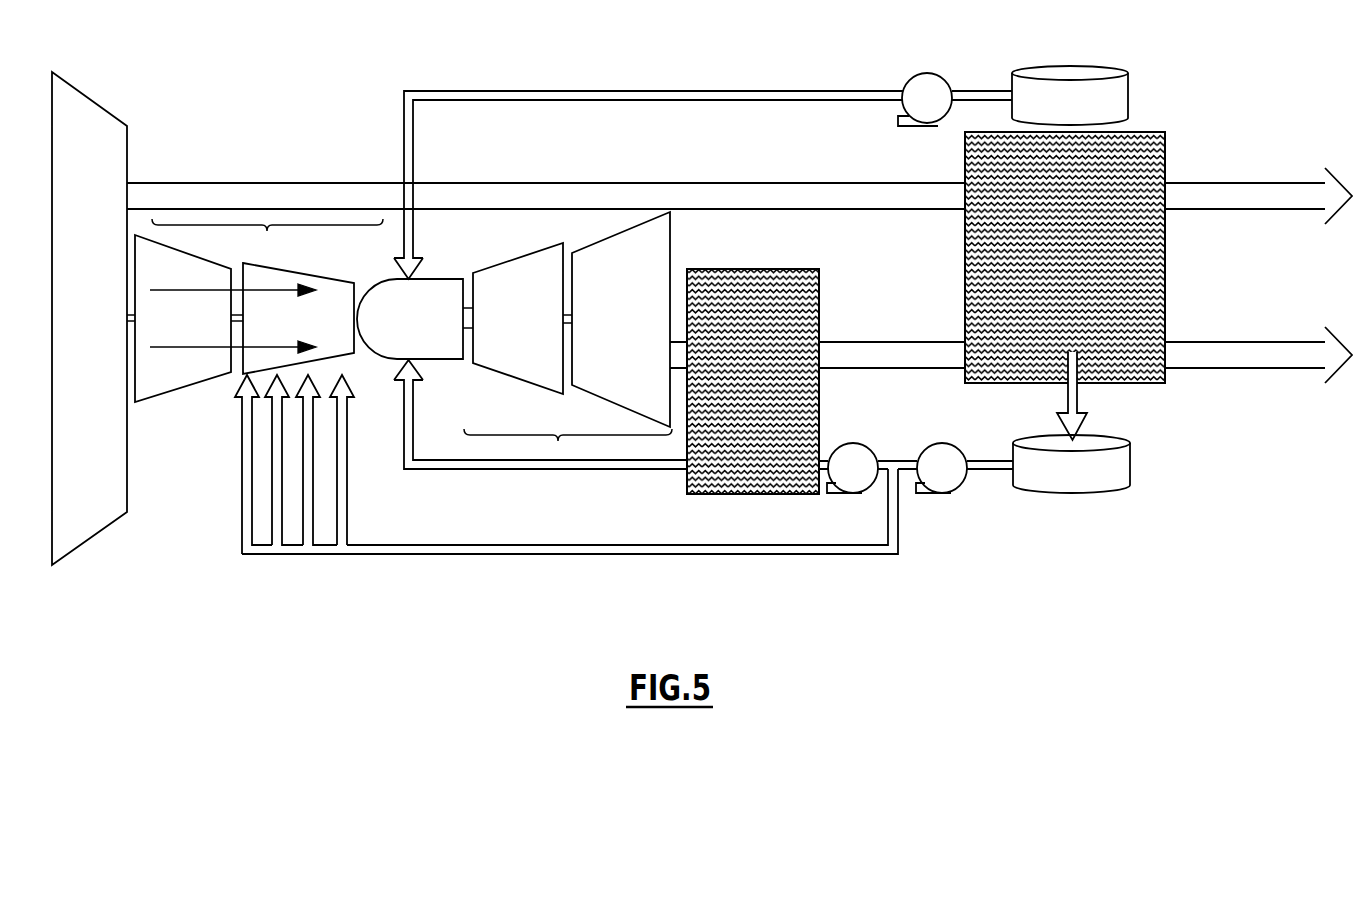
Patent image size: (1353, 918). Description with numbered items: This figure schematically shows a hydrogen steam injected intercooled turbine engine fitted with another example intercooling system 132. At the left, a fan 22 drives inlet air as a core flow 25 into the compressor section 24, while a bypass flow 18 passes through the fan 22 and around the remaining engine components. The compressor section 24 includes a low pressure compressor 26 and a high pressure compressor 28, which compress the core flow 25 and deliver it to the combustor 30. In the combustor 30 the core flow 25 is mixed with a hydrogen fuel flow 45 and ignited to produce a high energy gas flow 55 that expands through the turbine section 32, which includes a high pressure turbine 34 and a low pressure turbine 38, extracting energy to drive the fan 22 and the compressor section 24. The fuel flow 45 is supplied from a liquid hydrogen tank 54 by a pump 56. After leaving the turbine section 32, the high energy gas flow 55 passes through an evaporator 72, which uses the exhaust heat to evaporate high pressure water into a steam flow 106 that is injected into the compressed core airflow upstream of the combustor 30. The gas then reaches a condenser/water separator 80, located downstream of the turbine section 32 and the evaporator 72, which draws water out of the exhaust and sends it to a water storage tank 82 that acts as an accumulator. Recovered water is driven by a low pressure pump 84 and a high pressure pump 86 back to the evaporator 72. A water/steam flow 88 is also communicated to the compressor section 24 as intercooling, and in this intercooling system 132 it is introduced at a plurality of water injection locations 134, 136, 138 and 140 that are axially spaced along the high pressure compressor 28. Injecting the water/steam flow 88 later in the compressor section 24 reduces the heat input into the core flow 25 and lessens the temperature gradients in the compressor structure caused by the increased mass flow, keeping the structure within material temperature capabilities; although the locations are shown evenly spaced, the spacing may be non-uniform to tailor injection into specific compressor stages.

The bypass flow 18 is at (517, 196).
The fan 22 is at (91, 94).
The compressor section 24 is at (267, 224).
The core flow 25 is at (173, 348).
The low pressure compressor 26 is at (199, 273).
The high pressure compressor 28 is at (280, 279).
The combustor 30 is at (437, 296).
The turbine section 32 is at (558, 437).
The high pressure turbine 34 is at (531, 271).
The low pressure turbine 38 is at (660, 236).
The fuel flow 45 is at (652, 93).
The liquid hydrogen tank 54 is at (1065, 78).
The high energy gas flow 55 is at (875, 351).
The pump 56 is at (915, 86).
The evaporator 72 is at (820, 298).
The condenser/water separator 80 is at (1150, 300).
The water storage tank 82 is at (1125, 484).
The low pressure pump 84 is at (945, 456).
The high pressure pump 86 is at (855, 456).
The water/steam flow 88 is at (678, 549).
The steam flow 106 is at (503, 470).
The intercooling system 132 is at (445, 602).
The water injection location 134 is at (242, 432).
The water injection location 136 is at (275, 457).
The water injection location 138 is at (310, 477).
The water injection location 140 is at (345, 520).